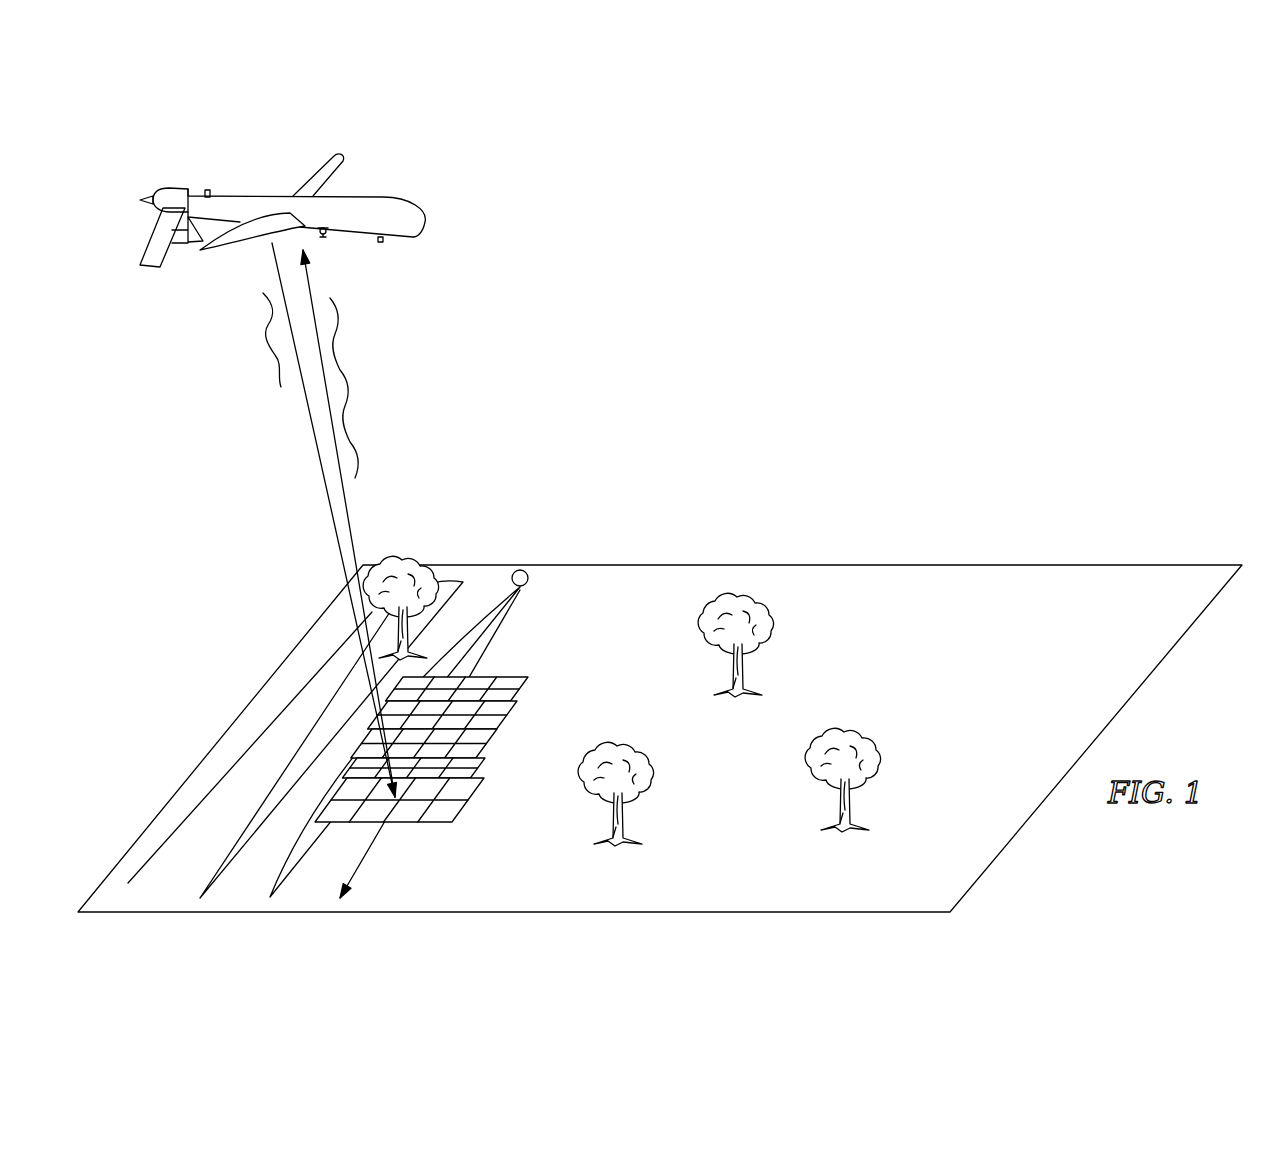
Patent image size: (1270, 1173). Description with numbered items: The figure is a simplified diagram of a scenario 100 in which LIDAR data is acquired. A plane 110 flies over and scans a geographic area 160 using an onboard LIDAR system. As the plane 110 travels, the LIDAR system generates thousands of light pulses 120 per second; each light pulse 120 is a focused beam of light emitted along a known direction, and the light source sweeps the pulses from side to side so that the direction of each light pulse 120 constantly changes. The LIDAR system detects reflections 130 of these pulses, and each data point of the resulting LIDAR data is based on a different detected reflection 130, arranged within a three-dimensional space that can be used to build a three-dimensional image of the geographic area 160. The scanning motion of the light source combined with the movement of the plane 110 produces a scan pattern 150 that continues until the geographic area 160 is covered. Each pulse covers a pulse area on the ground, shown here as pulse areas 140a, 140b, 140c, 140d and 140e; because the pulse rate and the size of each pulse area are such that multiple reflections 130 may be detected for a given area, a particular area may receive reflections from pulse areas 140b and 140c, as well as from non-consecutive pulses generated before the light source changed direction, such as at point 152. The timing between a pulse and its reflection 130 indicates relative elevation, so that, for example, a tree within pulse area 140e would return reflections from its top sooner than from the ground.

The scenario 100 is at (660, 530).
The plane 110 is at (254, 197).
The light pulse 120 is at (314, 477).
The reflection 130 is at (317, 285).
The pulse area 140a is at (518, 692).
The pulse area 140b is at (500, 718).
The pulse area 140c is at (485, 745).
The pulse area 140d is at (470, 767).
The pulse area 140e is at (453, 807).
The scan pattern 150 is at (507, 613).
The point 152 is at (529, 582).
The geographic area 160 is at (835, 565).